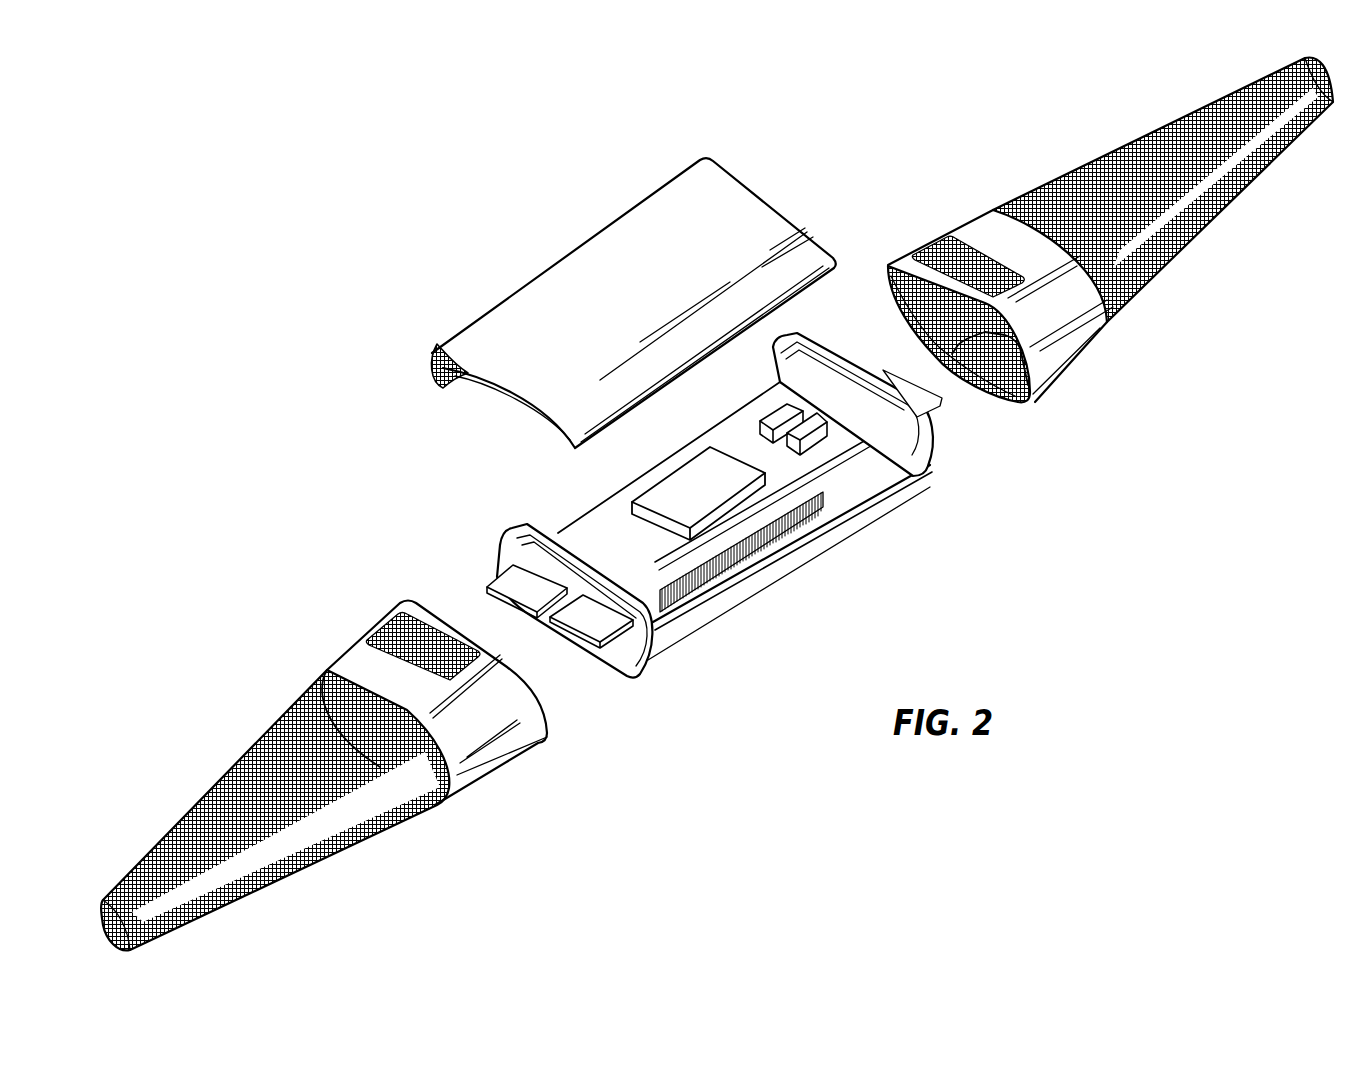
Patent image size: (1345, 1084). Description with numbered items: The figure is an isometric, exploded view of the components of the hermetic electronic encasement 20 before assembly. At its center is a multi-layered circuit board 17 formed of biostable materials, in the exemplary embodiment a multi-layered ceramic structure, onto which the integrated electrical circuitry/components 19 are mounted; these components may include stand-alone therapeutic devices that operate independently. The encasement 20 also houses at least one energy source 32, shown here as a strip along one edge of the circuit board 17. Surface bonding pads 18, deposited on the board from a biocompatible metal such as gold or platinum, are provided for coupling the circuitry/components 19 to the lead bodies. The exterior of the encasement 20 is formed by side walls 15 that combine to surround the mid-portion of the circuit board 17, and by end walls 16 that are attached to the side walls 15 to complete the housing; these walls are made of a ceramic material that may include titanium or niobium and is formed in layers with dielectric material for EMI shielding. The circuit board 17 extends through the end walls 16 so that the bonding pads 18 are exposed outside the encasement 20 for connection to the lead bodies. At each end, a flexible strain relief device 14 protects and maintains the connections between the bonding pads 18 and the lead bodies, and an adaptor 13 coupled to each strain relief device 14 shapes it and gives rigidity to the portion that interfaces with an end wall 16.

The hermetic electronic encasement 20 is at (858, 158).
The adaptor 13 is at (357, 638).
The flexible strain relief device 14 is at (213, 772).
The side walls 15 is at (430, 348).
The end walls 16 is at (524, 527).
The circuit board 17 is at (657, 563).
The bonding pads 18 is at (510, 578).
The electrical circuitry/components 19 is at (693, 493).
The energy source 32 is at (817, 506).